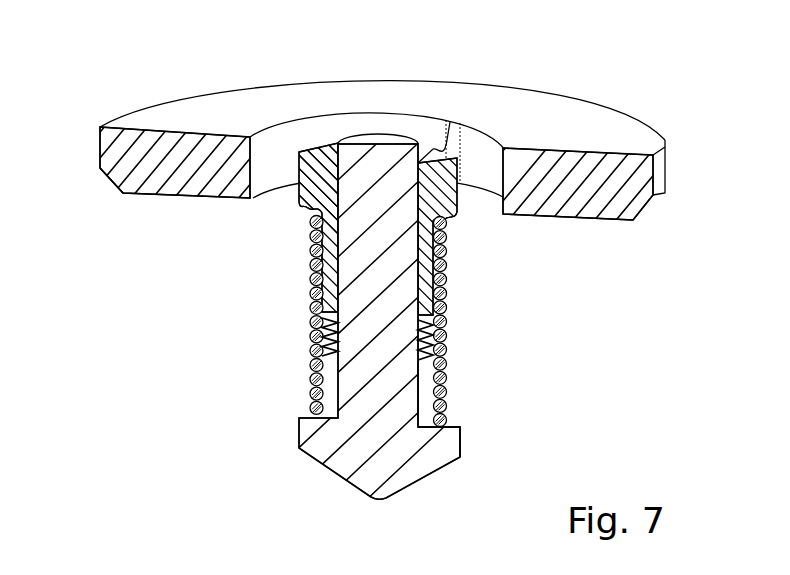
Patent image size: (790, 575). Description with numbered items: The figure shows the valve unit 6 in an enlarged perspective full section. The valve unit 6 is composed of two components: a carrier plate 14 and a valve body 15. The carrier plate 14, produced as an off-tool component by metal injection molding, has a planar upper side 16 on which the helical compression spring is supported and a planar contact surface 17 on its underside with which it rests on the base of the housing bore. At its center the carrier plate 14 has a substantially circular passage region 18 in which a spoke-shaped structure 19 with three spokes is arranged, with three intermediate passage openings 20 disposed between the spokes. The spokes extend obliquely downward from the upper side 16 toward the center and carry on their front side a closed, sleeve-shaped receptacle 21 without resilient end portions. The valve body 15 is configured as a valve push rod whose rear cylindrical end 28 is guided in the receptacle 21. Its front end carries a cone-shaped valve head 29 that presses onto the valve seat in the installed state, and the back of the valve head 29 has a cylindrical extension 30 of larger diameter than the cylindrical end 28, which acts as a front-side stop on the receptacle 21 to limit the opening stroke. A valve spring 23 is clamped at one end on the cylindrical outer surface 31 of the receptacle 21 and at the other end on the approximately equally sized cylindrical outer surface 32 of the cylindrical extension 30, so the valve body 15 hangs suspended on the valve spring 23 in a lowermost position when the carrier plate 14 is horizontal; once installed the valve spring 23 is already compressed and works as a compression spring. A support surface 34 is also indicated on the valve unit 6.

The valve unit 6 is at (386, 287).
The carrier plate 14 is at (101, 152).
The valve body 15 is at (312, 338).
The upper side 16 is at (190, 117).
The contact surface 17 is at (148, 198).
The passage region 18 is at (492, 124).
The spoke-shaped structure 19 is at (428, 137).
The passage opening 20 is at (274, 143).
The receptacle 21 is at (445, 265).
The valve spring 23 is at (428, 343).
The cylindrical end 28 is at (412, 301).
The valve head 29 is at (395, 294).
The cylindrical extension 30 is at (425, 385).
The cylindrical outer surface 31 is at (312, 262).
The cylindrical outer surface 32 is at (311, 407).
The support surface 34 is at (456, 419).